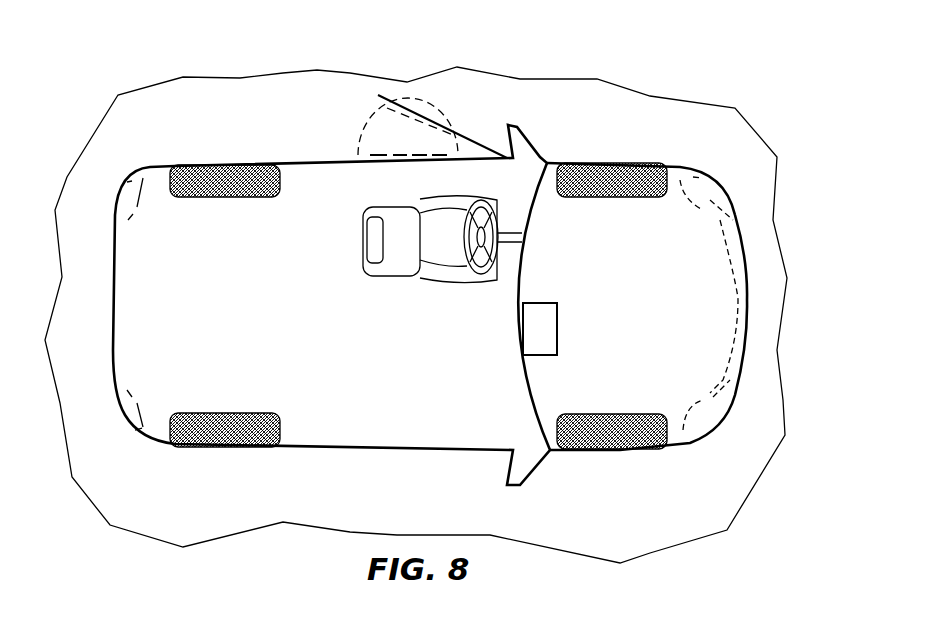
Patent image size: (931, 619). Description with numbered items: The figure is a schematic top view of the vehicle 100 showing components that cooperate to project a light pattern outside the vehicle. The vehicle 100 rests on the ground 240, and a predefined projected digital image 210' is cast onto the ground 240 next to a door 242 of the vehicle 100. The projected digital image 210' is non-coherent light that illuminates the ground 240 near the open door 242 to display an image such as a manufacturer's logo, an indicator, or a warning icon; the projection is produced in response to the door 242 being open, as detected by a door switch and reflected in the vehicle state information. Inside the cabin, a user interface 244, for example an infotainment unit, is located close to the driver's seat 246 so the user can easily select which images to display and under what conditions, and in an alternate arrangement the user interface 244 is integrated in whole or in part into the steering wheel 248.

The vehicle 100 is at (683, 166).
The projected digital image 210' is at (354, 94).
The ground 240 is at (447, 508).
The door 242 is at (450, 128).
The user interface 244 is at (559, 328).
The driver's seat 246 is at (363, 255).
The steering wheel 248 is at (465, 247).